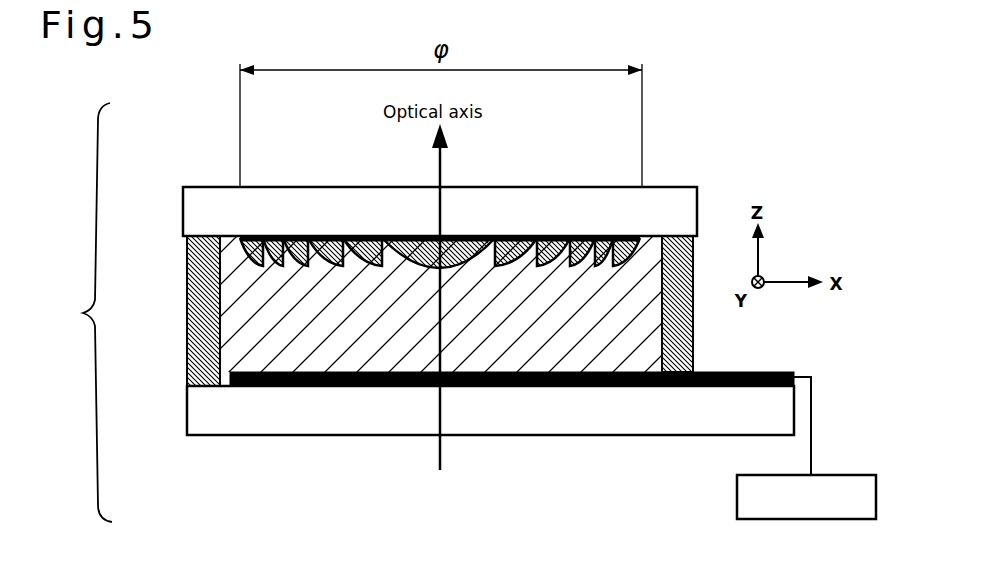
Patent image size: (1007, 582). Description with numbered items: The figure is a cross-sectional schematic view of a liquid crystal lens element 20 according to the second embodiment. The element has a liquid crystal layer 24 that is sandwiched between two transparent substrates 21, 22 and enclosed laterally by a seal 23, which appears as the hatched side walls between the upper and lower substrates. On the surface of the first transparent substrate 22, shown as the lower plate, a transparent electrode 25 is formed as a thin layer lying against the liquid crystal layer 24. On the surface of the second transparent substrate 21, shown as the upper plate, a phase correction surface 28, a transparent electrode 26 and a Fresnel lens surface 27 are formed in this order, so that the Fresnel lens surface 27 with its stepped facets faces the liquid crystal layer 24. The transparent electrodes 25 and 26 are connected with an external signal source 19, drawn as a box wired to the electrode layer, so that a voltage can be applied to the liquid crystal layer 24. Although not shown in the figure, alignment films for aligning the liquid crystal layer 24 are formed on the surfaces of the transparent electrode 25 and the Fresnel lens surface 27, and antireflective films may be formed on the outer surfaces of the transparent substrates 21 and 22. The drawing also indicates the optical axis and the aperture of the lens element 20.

The external signal source 19 is at (737, 496).
The liquid crystal lens element 20 is at (46, 325).
The second transparent substrate 21 is at (215, 205).
The first transparent substrate 22 is at (225, 420).
The seal 23 is at (205, 330).
The liquid crystal layer 24 is at (258, 340).
The transparent electrode 25 is at (383, 387).
The transparent electrode 26 is at (388, 187).
The Fresnel lens surface 27 is at (513, 187).
The phase correction surface 28 is at (311, 187).